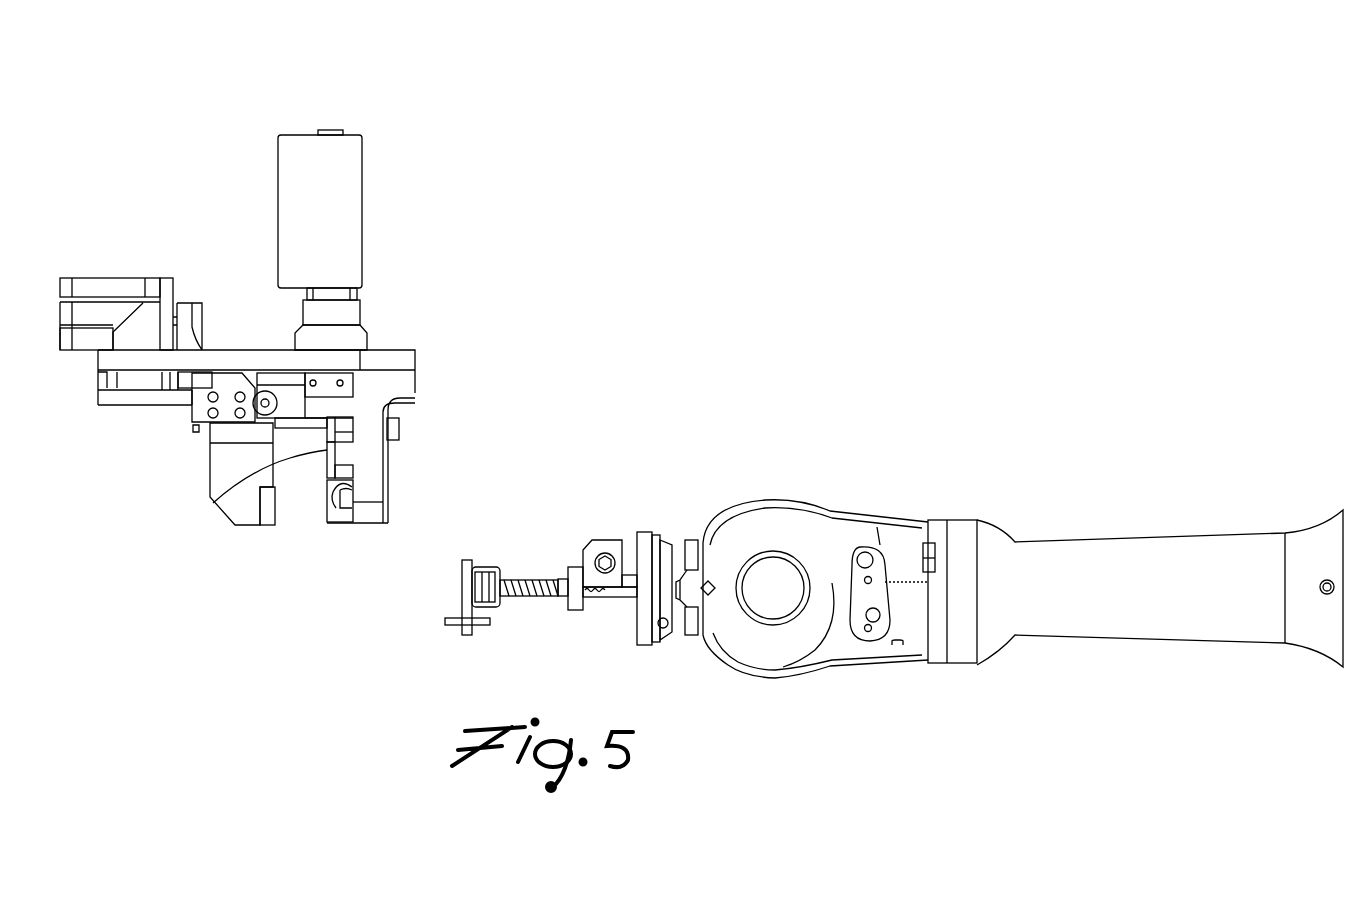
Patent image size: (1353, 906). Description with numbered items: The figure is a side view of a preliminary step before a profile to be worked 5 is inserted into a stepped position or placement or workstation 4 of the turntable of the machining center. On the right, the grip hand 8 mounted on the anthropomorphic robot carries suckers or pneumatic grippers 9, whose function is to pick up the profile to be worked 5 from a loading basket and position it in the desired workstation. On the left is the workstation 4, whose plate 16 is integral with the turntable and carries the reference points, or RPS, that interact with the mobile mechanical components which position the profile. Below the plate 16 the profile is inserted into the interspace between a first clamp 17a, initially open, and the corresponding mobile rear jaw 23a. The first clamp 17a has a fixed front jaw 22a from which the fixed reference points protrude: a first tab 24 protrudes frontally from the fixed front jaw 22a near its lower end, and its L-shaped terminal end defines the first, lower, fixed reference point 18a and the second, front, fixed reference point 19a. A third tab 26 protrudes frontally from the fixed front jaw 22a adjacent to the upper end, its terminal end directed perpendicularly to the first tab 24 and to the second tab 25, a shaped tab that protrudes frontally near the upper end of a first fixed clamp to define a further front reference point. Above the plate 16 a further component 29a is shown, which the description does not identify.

The stepped position or placement or workstation 4 is at (185, 185).
The actuator 29a is at (355, 118).
The plate 16 is at (395, 350).
The first clamp 17a is at (435, 375).
The second tab 25 is at (400, 432).
The mobile rear jaw 23a is at (230, 458).
The third tab 26 is at (213, 503).
The fixed front jaw 22a is at (370, 472).
The second, front, fixed reference point 19a is at (355, 488).
The first, lower, fixed reference point 18a is at (334, 493).
The first tab 24 is at (342, 540).
The suckers or pneumatic grippers 9 is at (500, 555).
The profile to be worked 5 is at (445, 578).
The grip hand 8 is at (1153, 515).